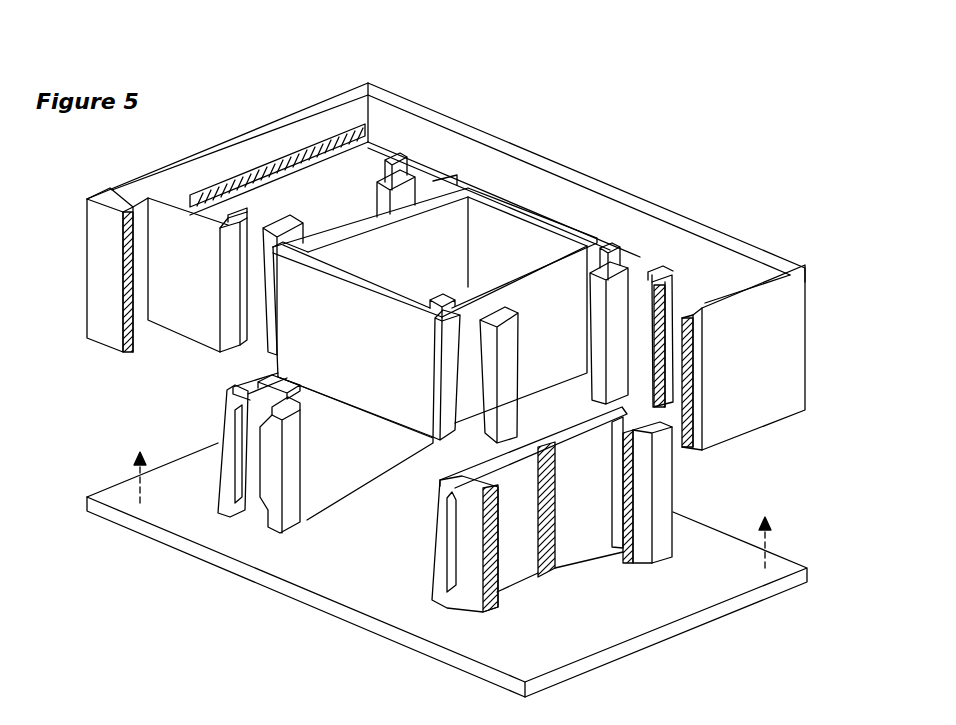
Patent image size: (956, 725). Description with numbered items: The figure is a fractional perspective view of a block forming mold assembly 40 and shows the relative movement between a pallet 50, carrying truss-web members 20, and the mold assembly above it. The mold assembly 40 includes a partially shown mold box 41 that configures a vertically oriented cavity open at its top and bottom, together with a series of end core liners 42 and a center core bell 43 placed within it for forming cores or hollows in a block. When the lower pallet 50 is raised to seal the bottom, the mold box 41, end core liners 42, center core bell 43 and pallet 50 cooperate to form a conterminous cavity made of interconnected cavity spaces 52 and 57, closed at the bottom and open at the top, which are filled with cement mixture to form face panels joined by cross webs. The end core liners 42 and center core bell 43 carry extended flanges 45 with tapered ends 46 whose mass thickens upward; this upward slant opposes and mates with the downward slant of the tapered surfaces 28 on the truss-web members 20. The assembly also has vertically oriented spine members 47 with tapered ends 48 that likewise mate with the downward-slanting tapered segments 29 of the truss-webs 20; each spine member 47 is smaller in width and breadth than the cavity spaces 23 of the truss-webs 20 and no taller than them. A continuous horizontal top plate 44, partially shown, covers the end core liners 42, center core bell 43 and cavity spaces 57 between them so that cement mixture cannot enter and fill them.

The truss-web member 20 is at (372, 473).
The cavity space 23 is at (283, 387).
The tapered surface 28 is at (220, 485).
The tapered segment 29 is at (495, 557).
The block forming mold assembly 40 is at (639, 144).
The mold box 41 is at (601, 184).
The end core liner 42 is at (170, 230).
The center core bell 43 is at (533, 212).
The top plate 44 is at (258, 148).
The extended flange 45 is at (232, 222).
The tapered end 46 is at (280, 353).
The spine member 47 is at (293, 235).
The tapered end 48 is at (270, 268).
The pallet 50 is at (298, 562).
The cavity space 52 is at (512, 188).
The cavity space 57 is at (320, 198).